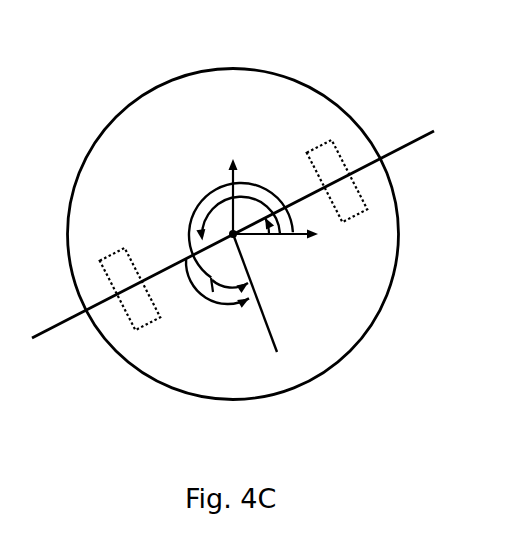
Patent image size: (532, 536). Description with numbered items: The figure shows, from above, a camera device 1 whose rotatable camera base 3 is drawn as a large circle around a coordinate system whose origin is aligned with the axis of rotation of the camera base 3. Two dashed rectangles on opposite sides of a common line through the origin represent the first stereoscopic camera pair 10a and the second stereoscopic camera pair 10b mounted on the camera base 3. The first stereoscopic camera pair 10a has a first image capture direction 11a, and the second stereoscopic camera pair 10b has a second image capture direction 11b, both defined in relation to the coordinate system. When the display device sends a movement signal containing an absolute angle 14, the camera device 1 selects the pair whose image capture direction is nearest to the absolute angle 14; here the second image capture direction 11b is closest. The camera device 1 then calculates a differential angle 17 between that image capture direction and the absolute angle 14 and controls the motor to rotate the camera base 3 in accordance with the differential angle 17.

The camera device 1 is at (360, 90).
The camera base 3 is at (141, 93).
The first stereoscopic camera pair 10a is at (352, 220).
The second stereoscopic camera pair 10b is at (113, 252).
The first image capture direction 11a is at (269, 239).
The second image capture direction 11b is at (207, 207).
The absolute angle 14 is at (205, 293).
The differential angle 17 is at (243, 303).